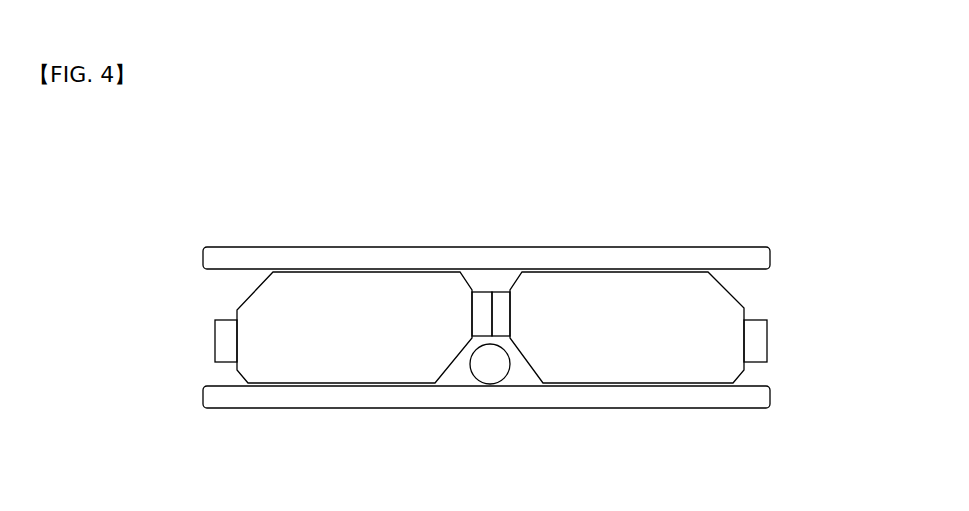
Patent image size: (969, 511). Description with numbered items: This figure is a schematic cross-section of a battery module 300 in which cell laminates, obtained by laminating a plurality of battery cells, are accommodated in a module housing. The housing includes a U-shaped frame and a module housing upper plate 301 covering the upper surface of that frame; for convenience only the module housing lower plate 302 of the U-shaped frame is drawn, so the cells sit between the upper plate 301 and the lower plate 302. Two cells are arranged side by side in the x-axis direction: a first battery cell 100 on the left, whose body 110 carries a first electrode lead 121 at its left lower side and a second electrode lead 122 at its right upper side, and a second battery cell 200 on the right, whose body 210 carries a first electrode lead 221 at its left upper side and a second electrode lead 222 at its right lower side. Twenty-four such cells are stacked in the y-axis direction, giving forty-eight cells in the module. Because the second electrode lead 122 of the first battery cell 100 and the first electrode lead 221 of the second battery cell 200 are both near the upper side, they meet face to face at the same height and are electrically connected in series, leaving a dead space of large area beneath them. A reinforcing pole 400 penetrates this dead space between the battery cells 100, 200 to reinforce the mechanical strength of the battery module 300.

The battery module 300 is at (149, 164).
The module housing upper plate 301 is at (770, 256).
The module housing lower plate 302 is at (770, 397).
The first battery cell 100 is at (222, 296).
The first body 110 is at (345, 355).
The first electrode lead 121 is at (215, 340).
The second electrode lead 122 is at (482, 292).
The second battery cell 200 is at (766, 288).
The second body 210 is at (638, 362).
The first electrode lead 221 is at (505, 292).
The second electrode lead 222 is at (767, 340).
The reinforcing pole 400 is at (502, 378).